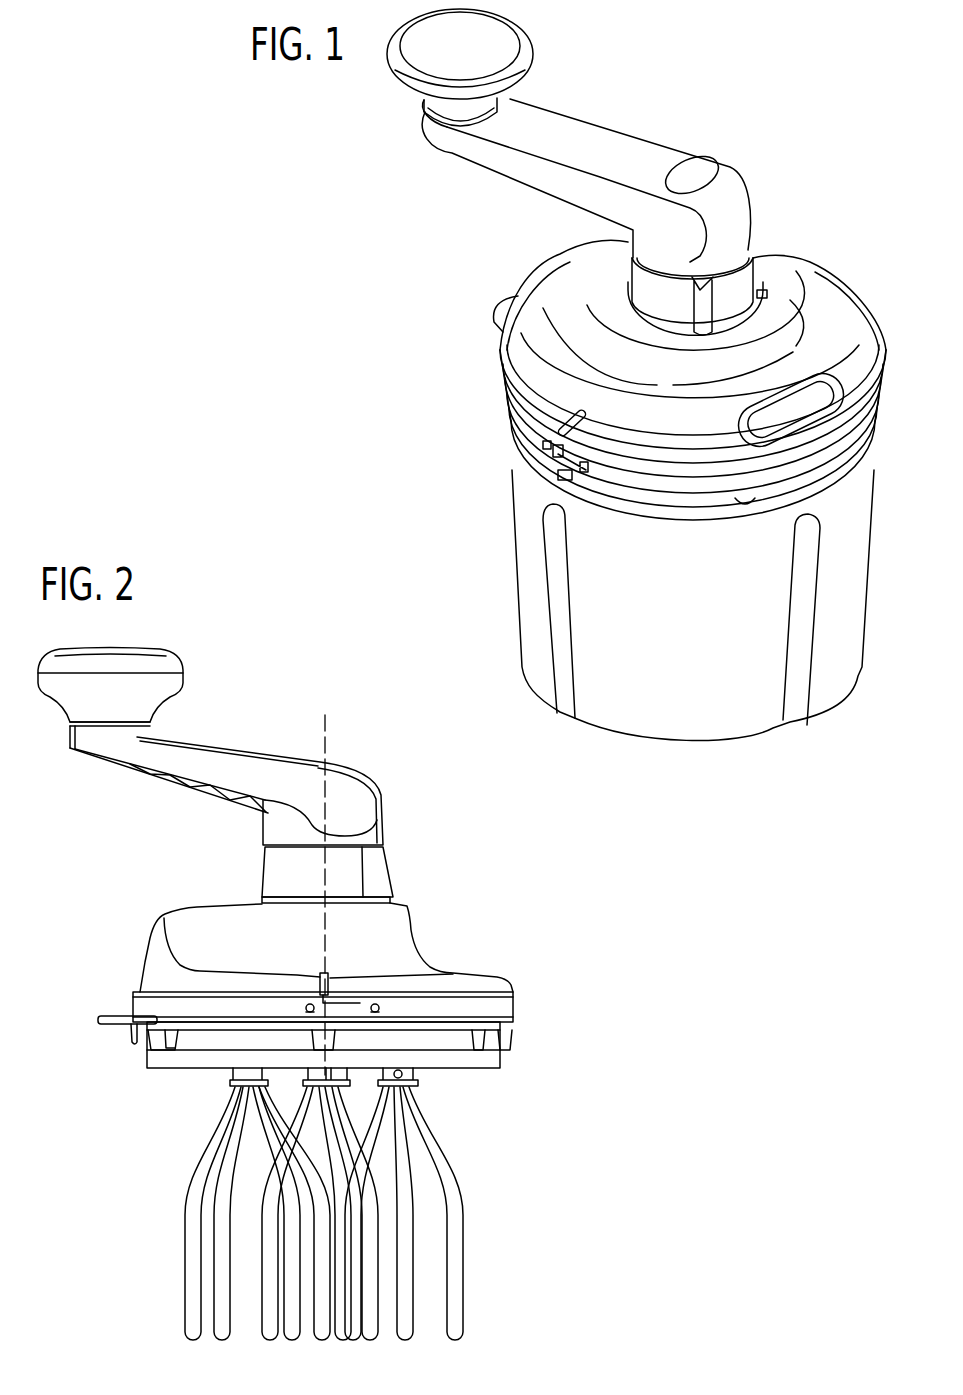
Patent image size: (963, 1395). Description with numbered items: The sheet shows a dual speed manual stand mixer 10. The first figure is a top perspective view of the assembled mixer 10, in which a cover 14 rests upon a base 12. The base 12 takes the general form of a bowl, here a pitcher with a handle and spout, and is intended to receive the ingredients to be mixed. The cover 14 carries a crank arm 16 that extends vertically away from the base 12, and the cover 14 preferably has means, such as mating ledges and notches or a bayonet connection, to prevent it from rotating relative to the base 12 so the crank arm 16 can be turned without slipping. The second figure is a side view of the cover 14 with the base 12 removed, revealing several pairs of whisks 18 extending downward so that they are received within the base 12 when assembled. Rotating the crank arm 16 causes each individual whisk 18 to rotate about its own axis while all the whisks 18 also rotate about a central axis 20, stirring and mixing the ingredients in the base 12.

In FIG. 1, the dual speed manual stand mixer 10 is at (797, 108).
In FIG. 1, the base 12 is at (535, 571).
In FIG. 1, the cover 14 is at (537, 316).
In FIG. 2, the cover 14 is at (455, 974).
In FIG. 1, the crank arm 16 is at (598, 137).
In FIG. 2, the crank arm 16 is at (233, 746).
In FIG. 2, the whisks 18 is at (300, 1112).
In FIG. 2, the central axis 20 is at (328, 735).